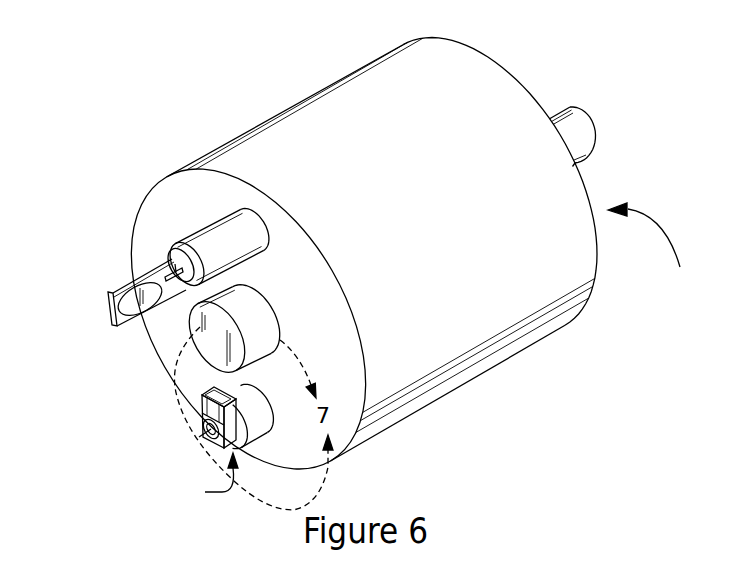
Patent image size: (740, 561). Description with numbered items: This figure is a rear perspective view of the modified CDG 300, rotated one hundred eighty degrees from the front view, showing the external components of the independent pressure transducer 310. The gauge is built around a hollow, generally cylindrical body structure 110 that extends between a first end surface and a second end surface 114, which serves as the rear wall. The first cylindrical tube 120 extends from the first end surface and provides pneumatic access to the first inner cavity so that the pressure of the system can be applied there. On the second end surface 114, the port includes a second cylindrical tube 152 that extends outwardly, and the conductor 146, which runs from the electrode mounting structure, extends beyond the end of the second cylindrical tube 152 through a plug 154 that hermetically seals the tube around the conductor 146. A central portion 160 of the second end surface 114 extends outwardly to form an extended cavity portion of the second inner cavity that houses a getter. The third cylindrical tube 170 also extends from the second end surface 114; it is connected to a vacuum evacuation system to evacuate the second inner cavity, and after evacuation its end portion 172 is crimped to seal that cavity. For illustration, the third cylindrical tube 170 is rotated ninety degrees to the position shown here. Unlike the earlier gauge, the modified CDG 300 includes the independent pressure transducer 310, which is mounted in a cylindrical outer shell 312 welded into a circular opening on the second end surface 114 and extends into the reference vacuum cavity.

The cylindrical body structure 110 is at (315, 123).
The first cylindrical tube 120 is at (568, 117).
The conductor 146 is at (174, 266).
The second cylindrical tube 152 is at (203, 240).
The plug 154 is at (184, 250).
The central portion 160 is at (192, 327).
The third cylindrical tube 170 is at (153, 273).
The end portion 172 is at (146, 311).
The second end surface 114 is at (202, 395).
The modified CDG 300 is at (653, 247).
The independent pressure transducer 310 is at (203, 479).
The cylindrical outer shell 312 is at (262, 413).